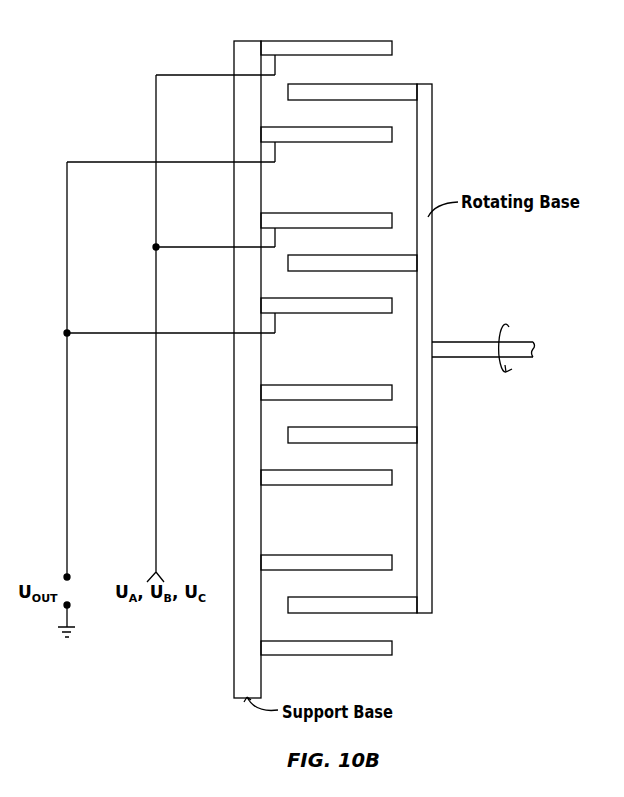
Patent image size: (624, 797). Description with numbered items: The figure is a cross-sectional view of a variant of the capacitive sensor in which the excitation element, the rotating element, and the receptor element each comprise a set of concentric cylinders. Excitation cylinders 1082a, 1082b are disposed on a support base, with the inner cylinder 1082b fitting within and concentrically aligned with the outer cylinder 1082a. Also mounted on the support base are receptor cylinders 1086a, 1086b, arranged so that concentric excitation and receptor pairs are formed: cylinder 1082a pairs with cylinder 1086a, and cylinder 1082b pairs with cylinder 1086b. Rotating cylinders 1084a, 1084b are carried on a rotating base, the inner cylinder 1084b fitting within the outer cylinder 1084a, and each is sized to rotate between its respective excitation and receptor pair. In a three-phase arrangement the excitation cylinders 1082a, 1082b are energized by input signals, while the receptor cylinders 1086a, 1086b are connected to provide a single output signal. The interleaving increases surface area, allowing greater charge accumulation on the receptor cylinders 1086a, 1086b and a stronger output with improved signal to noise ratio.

The outer excitation element cylinder 1082a is at (320, 41).
The outer rotating element cylinder 1084a is at (395, 83).
The outer receptor element cylinder 1086a is at (380, 143).
The inner excitation element cylinder 1082b is at (305, 213).
The inner rotating element cylinder 1084b is at (305, 255).
The inner receptor element cylinder 1086b is at (305, 313).